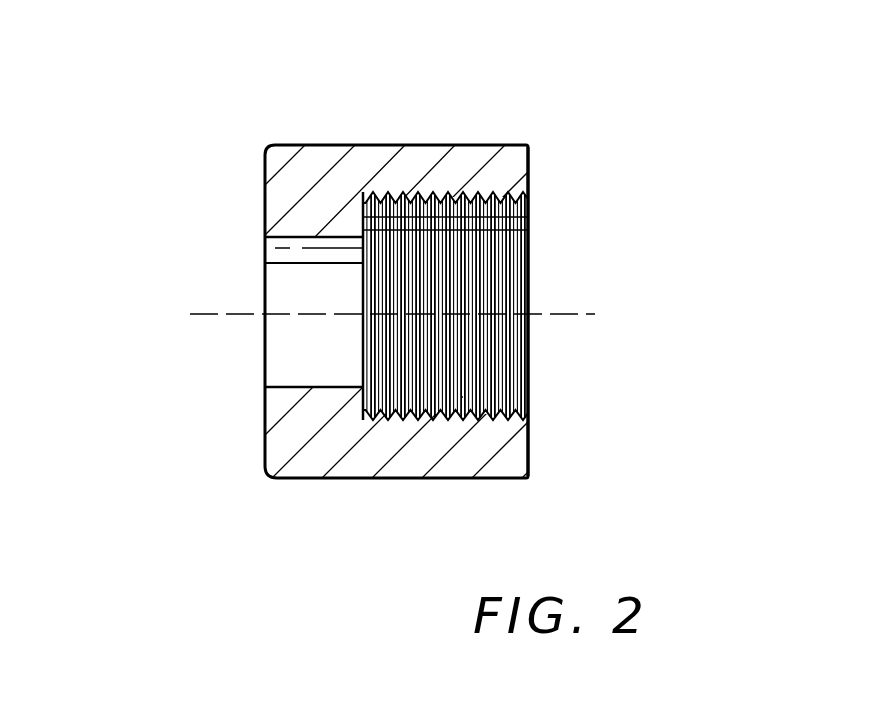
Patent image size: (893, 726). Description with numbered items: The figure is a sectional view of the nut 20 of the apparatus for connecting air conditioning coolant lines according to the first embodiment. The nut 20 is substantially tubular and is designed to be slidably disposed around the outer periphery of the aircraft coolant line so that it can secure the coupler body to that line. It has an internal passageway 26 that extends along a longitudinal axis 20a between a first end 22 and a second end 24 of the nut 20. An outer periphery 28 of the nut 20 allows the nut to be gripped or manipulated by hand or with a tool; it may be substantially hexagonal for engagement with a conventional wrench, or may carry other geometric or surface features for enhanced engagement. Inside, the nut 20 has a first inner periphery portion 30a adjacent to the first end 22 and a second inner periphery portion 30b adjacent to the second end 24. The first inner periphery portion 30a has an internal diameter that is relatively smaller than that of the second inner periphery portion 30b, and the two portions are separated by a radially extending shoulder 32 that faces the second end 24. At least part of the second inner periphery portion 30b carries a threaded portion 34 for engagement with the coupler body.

The nut 20 is at (214, 183).
The longitudinal axis 20a is at (542, 314).
The first end 22 is at (263, 421).
The second end 24 is at (528, 172).
The internal passageway 26 is at (550, 348).
The outer periphery 28 is at (380, 145).
The first inner periphery portion 30a is at (297, 238).
The second inner periphery portion 30b is at (462, 397).
The radially extending shoulder 32 is at (362, 222).
The threaded portion 34 is at (483, 241).